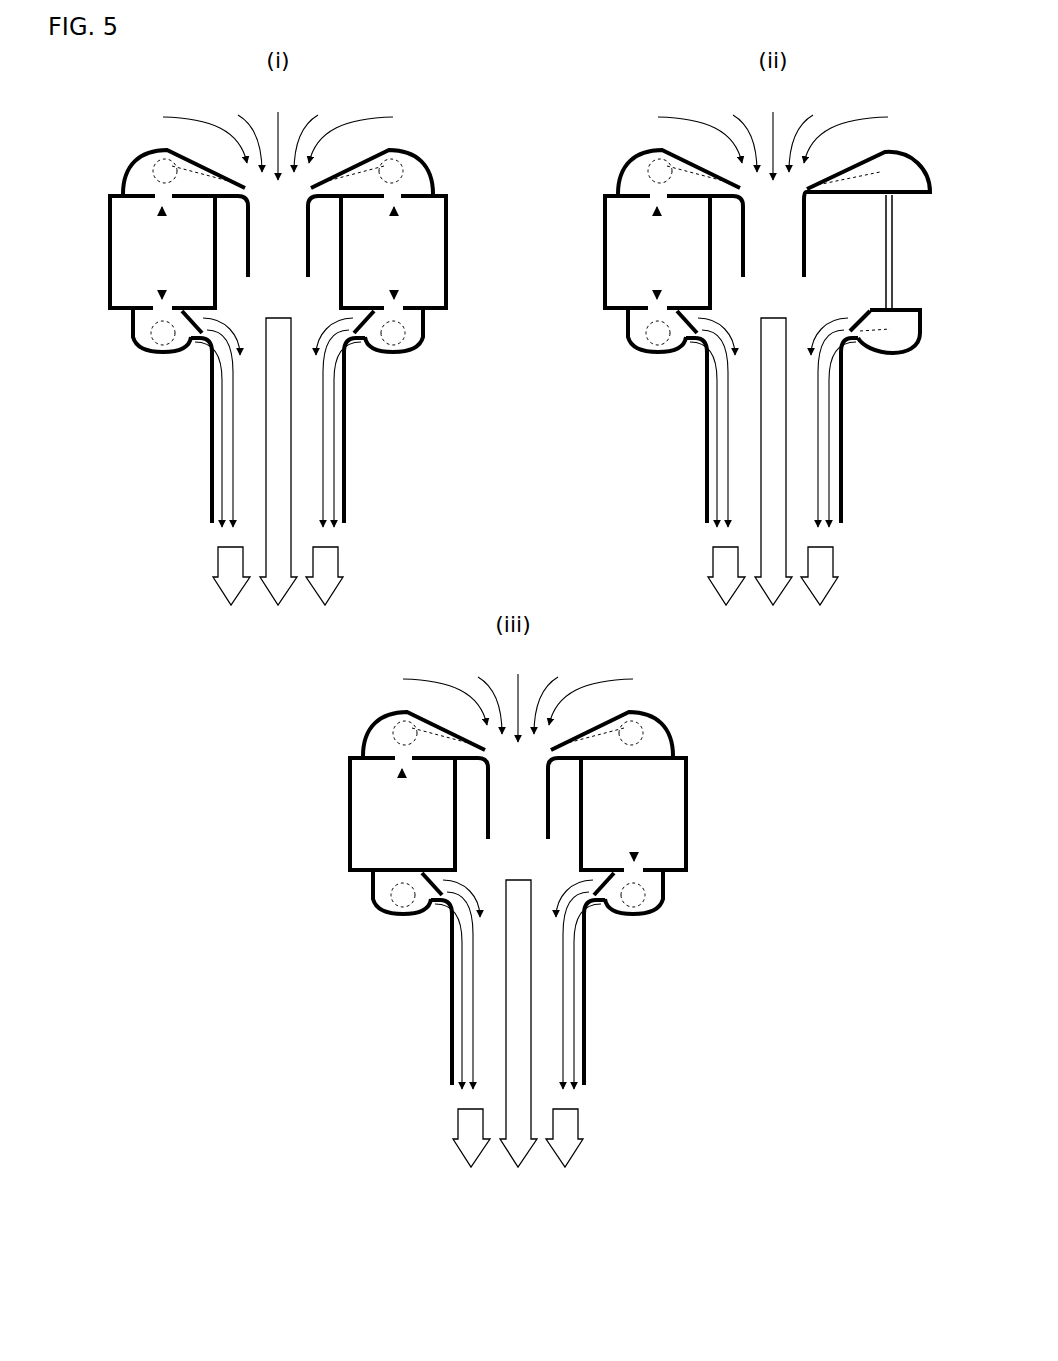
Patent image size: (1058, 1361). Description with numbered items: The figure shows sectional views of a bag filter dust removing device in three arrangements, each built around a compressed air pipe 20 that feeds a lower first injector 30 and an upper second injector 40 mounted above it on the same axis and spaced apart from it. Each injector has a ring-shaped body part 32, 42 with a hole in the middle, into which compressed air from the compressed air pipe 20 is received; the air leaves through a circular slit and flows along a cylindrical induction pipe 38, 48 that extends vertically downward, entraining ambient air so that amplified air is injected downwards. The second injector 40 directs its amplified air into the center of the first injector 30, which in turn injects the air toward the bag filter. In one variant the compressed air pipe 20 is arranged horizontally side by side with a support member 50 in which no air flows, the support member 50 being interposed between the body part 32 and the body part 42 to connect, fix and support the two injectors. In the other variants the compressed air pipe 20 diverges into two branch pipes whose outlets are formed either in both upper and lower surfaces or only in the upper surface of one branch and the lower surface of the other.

The compressed air pipe 20 is at (104, 216).
The first injector 30 is at (412, 366).
The body part 32 is at (131, 336).
The induction pipe 38 is at (349, 453).
The second injector 40 is at (134, 150).
The body part 42 is at (395, 151).
The induction pipe 48 is at (808, 253).
The support member 50 is at (894, 246).